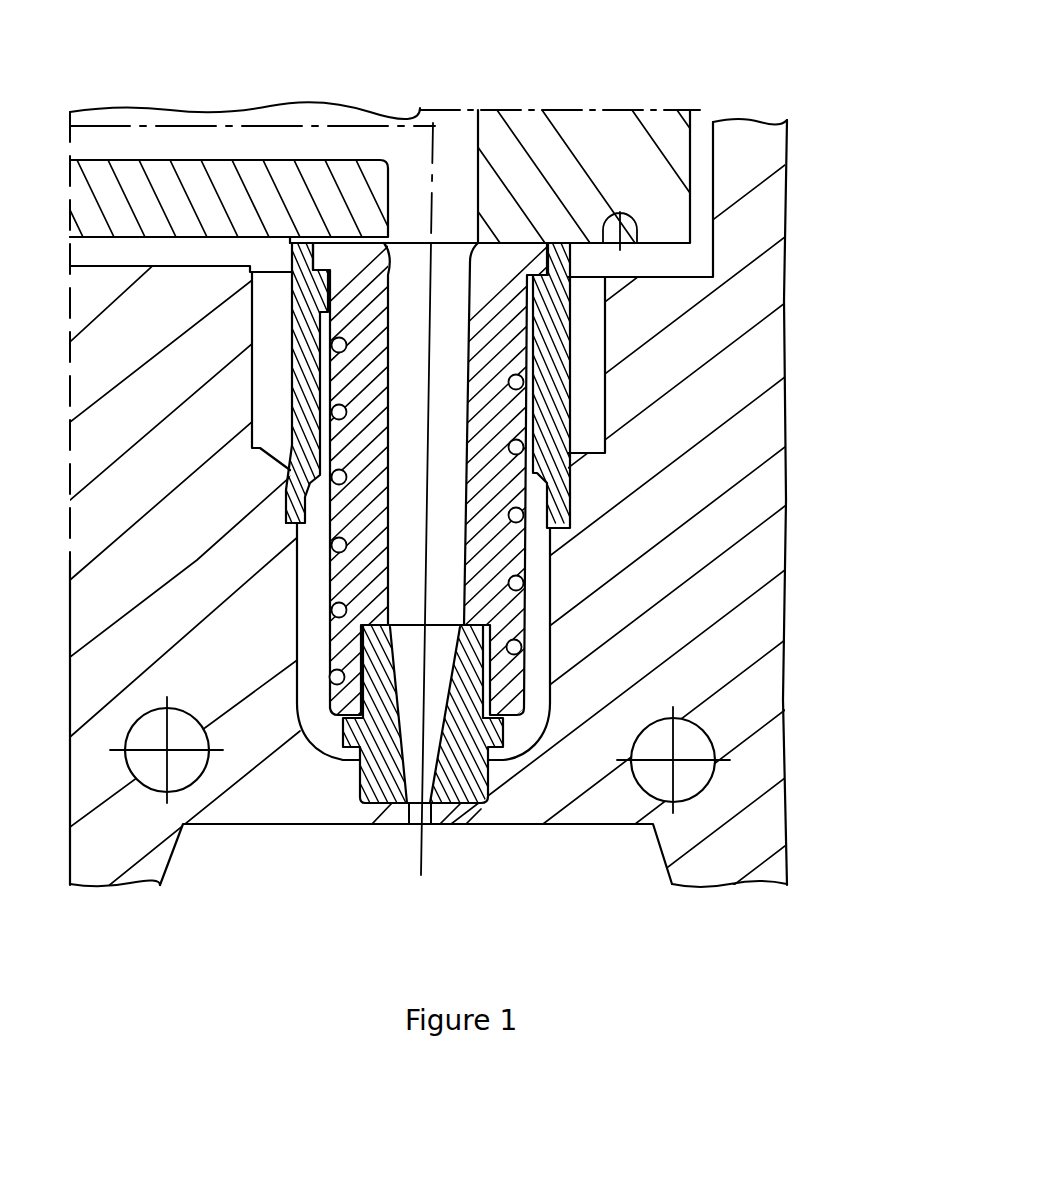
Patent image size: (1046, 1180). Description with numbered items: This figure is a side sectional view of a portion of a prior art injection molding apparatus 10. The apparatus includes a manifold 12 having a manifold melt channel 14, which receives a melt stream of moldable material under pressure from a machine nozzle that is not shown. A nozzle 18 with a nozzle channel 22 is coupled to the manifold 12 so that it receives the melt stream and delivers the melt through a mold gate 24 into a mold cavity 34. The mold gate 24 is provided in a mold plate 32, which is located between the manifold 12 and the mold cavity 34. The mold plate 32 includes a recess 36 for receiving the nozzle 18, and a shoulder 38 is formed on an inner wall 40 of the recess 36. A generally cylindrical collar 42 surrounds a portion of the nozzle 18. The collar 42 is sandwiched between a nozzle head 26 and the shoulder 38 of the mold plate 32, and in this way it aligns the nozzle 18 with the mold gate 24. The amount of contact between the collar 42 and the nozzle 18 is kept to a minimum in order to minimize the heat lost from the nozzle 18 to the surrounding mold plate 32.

The injection molding apparatus 10 is at (798, 107).
The manifold 12 is at (553, 133).
The manifold melt channel 14 is at (219, 192).
The nozzle 18 is at (487, 553).
The nozzle channel 22 is at (458, 384).
The mold gate 24 is at (408, 820).
The nozzle head 26 is at (713, 278).
The mold plate 32 is at (190, 556).
The mold cavity 34 is at (286, 871).
The recess 36 is at (290, 640).
The shoulder 38 is at (295, 530).
The inner wall 40 is at (300, 588).
The collar 42 is at (548, 380).